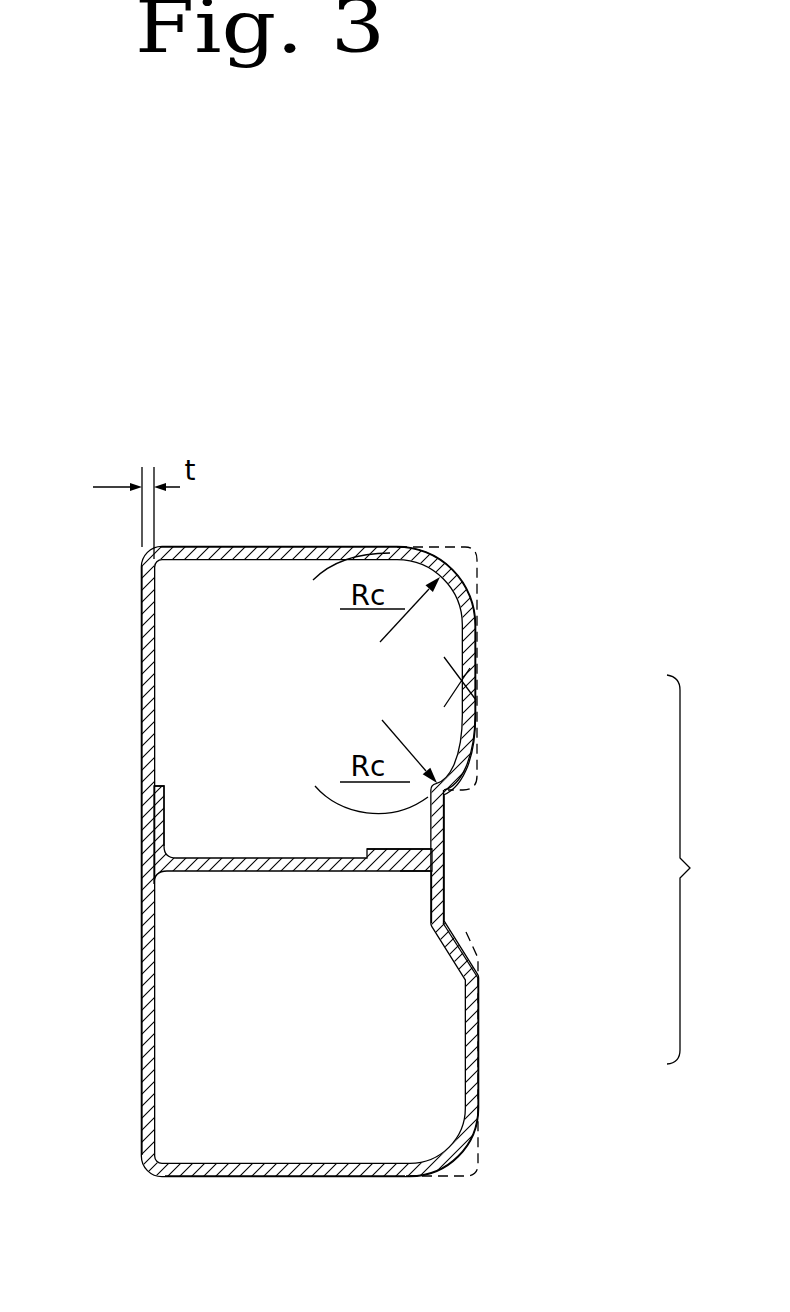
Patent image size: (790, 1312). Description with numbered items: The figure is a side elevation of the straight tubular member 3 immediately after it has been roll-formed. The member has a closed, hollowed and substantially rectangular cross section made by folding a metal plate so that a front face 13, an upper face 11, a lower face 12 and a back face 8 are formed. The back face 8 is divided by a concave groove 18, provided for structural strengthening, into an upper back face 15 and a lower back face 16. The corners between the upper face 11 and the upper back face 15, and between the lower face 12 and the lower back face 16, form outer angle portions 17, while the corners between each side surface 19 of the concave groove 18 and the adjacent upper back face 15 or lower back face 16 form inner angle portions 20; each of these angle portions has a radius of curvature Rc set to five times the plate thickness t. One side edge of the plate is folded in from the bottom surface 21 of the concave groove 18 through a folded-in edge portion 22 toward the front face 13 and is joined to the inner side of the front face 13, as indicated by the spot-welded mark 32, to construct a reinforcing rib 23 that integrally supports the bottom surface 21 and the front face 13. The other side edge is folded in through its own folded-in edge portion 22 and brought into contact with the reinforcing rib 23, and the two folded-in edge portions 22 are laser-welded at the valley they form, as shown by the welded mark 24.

The straight tubular member 3 is at (122, 588).
The back face 8 is at (699, 869).
The upper face 11 is at (270, 547).
The lower face 12 is at (297, 1177).
The front face 13 is at (142, 636).
The upper back face 15 is at (478, 672).
The lower back face 16 is at (479, 1053).
The outer angle portion 17 is at (448, 575).
The concave groove 18 is at (418, 911).
The side surface 19 is at (447, 789).
The inner angle portion 20 is at (479, 748).
The bottom surface 21 is at (431, 893).
The folded-in edge portion 22 is at (441, 842).
The reinforcing rib 23 is at (282, 872).
The welded mark 24 is at (446, 865).
The spot-welded mark 32 is at (154, 813).